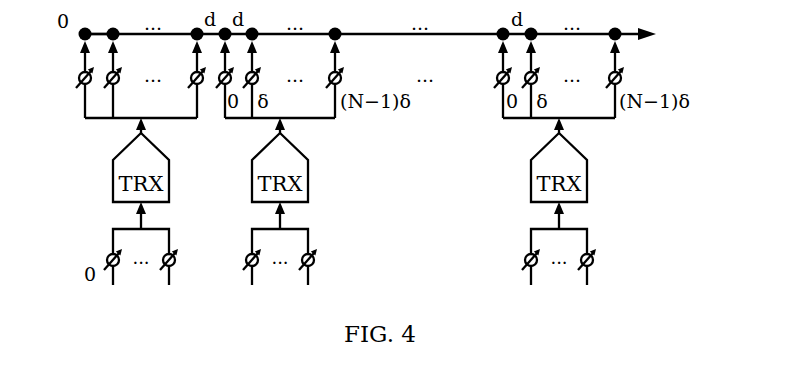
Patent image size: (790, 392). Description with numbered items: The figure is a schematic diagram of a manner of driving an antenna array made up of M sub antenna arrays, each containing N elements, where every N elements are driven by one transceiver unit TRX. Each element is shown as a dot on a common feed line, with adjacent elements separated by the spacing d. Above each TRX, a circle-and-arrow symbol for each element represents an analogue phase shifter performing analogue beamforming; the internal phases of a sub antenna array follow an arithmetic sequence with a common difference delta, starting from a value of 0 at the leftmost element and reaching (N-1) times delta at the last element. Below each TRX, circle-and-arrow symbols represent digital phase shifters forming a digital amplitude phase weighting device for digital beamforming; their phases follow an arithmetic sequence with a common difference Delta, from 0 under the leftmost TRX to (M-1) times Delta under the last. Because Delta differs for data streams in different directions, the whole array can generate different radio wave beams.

The start phase value 0 is at (79, 73).
The element spacing d is at (99, 21).
The last element phase multiple N-1 is at (162, 73).
The transceiver unit TRX is at (141, 201).
The last sub-array phase multiple M-1 is at (595, 202).